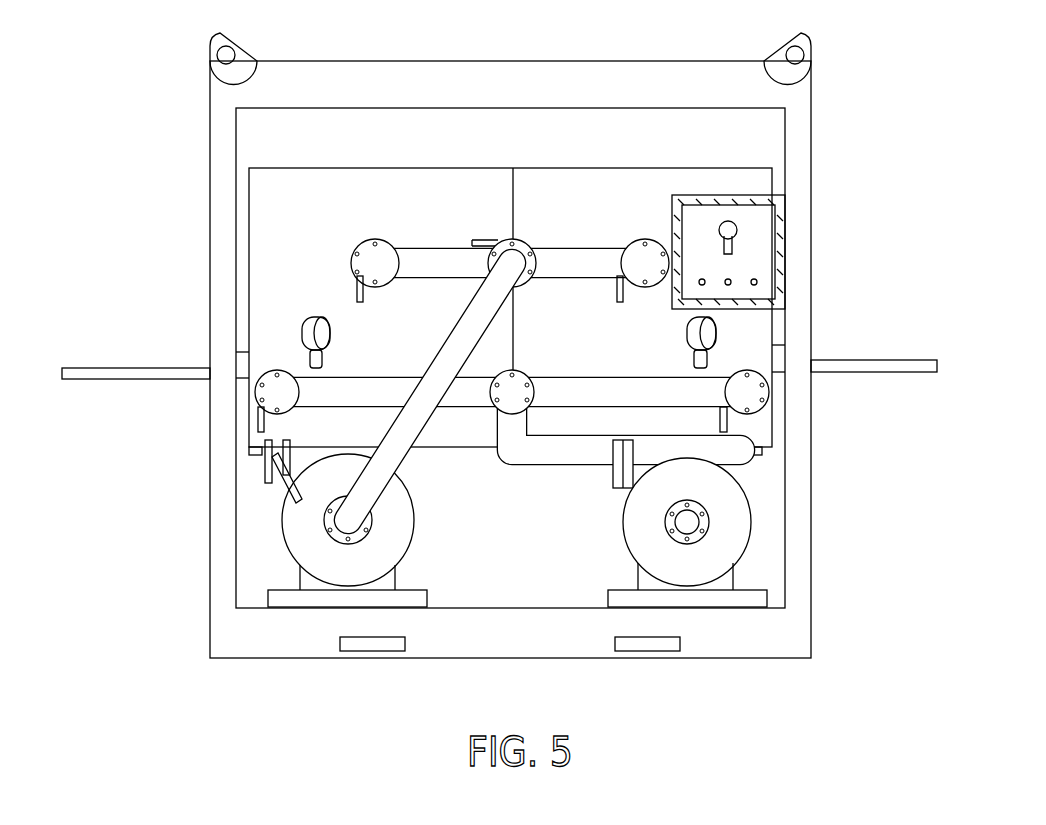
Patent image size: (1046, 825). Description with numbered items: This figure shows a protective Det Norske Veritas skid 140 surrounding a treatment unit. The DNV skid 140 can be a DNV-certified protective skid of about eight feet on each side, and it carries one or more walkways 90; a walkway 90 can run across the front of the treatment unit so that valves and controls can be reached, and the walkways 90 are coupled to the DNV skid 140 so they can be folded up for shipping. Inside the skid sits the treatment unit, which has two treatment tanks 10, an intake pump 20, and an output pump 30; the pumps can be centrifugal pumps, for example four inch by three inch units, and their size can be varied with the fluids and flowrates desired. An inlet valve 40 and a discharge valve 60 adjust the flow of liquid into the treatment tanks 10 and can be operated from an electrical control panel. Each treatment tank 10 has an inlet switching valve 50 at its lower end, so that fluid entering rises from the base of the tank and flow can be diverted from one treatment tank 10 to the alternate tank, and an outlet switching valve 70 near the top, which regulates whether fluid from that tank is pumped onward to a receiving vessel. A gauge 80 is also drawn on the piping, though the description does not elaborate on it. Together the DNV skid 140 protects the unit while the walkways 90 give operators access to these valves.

The treatment tank 10 is at (343, 168).
The intake pump 20 is at (623, 535).
The output pump 30 is at (412, 519).
The inlet valve 40 is at (516, 371).
The inlet switching valve 50 is at (281, 371).
The discharge valve 60 is at (520, 241).
The outlet switching valve 70 is at (375, 241).
The pressure gauge 80 is at (312, 317).
The walkway 90 is at (120, 368).
The DNV skid 140 is at (520, 61).